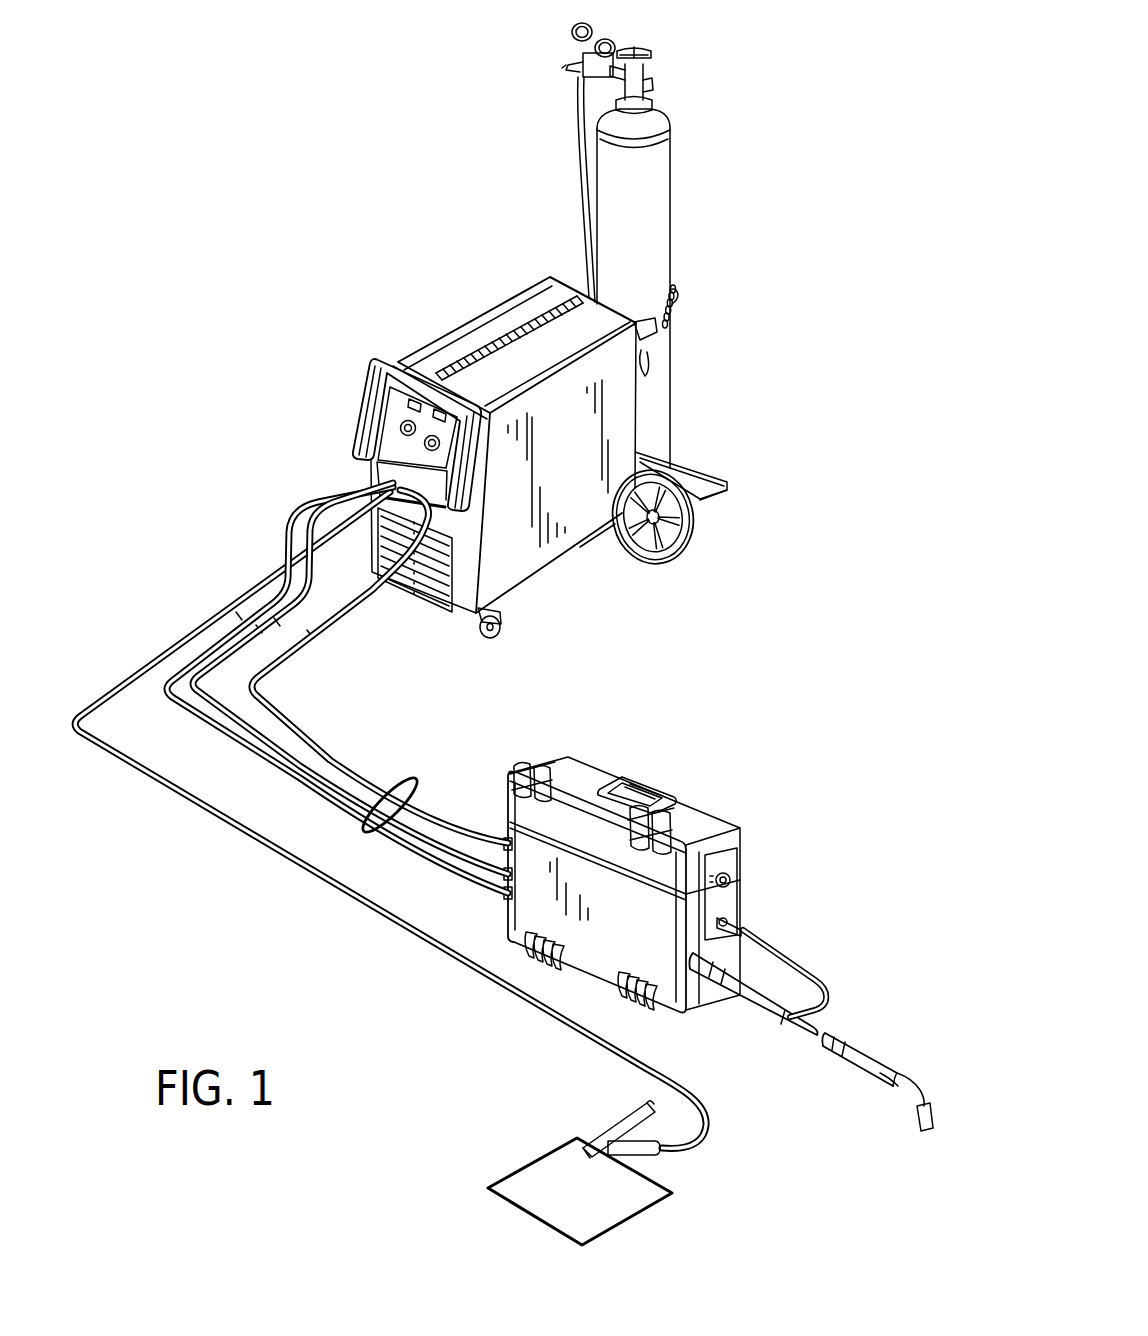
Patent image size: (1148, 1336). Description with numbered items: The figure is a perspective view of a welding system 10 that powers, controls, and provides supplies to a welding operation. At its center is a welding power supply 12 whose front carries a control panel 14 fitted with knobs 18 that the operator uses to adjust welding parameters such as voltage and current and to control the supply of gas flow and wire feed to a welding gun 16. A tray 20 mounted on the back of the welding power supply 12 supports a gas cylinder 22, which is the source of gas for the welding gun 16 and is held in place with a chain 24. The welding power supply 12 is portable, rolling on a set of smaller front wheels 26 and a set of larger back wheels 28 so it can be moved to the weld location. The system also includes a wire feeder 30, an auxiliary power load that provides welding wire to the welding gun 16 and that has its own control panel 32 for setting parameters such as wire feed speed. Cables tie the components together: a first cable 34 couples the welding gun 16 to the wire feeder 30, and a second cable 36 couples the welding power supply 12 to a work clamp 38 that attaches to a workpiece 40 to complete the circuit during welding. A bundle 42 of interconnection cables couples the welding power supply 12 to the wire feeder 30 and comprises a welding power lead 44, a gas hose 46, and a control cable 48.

The welding system 10 is at (314, 276).
The welding power supply 12 is at (522, 300).
The control panel 14 is at (403, 397).
The welding gun 16 is at (866, 1046).
The knobs 18 is at (424, 443).
The tray 20 is at (713, 495).
The gas cylinder 22 is at (662, 200).
The chain 24 is at (680, 292).
The front wheels 26 is at (504, 635).
The back wheels 28 is at (663, 565).
The wire feeder 30 is at (627, 754).
The control panel 32 is at (748, 862).
The first cable 34 is at (760, 1002).
The second cable 36 is at (105, 690).
The work clamp 38 is at (630, 1115).
The workpiece 40 is at (600, 1203).
The bundle of cables 42 is at (412, 790).
The welding power lead 44 is at (173, 667).
The gas hose 46 is at (233, 645).
The control cable 48 is at (294, 725).